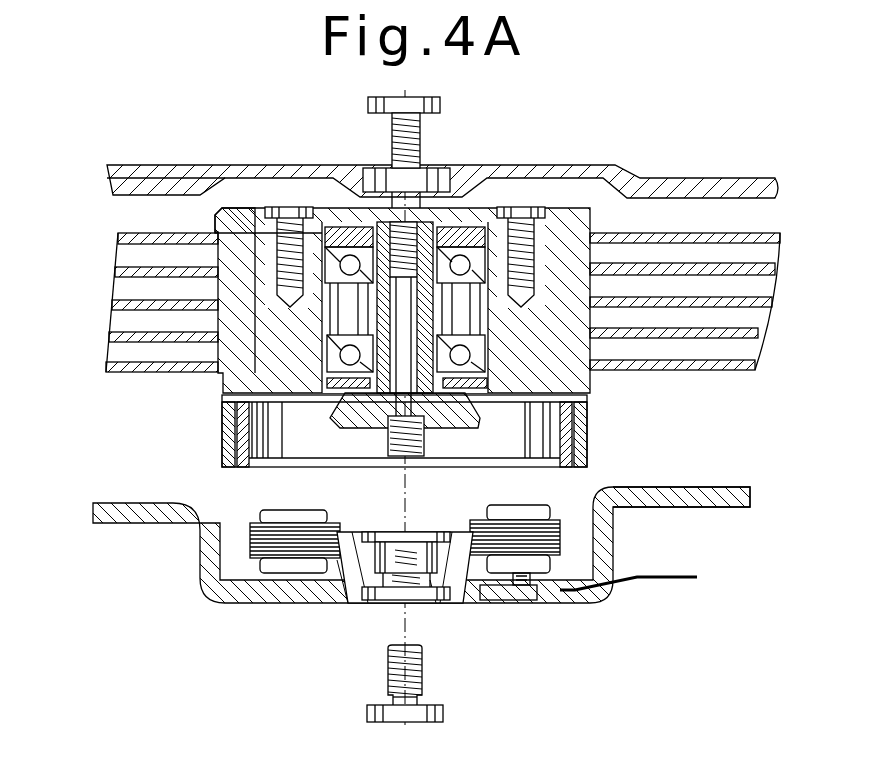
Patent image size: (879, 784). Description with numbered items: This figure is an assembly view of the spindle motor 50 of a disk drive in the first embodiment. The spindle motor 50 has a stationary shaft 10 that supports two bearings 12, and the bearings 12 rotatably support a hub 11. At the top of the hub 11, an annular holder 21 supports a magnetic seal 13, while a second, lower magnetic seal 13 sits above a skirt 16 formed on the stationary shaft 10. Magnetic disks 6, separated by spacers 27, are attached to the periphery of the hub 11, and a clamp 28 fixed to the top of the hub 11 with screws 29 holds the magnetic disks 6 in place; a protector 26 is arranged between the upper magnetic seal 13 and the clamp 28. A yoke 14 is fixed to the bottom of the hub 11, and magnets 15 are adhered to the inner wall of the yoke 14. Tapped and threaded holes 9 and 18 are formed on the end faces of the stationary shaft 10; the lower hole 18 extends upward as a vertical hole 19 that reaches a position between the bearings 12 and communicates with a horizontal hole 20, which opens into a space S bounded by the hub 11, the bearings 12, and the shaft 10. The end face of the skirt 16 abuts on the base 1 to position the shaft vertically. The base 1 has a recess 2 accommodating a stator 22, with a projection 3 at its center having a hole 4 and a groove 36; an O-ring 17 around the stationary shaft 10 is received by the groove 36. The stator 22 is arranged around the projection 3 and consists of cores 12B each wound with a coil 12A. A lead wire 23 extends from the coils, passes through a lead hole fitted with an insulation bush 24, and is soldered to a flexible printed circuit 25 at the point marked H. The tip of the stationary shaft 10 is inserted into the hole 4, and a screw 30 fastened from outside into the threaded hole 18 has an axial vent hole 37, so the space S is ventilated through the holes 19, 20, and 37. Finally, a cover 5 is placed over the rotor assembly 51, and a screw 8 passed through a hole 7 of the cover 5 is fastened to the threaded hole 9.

The base 1 is at (690, 492).
The recess 2 is at (575, 572).
The projection 3 is at (458, 560).
The hole 4 is at (413, 563).
The cover 5 is at (710, 178).
The magnetic disks 6 is at (725, 372).
The hole 7 is at (392, 192).
The screw 8 is at (440, 102).
The tapped and threaded hole 9 is at (290, 405).
The stationary shaft 10 is at (425, 262).
The hub 11 is at (623, 280).
The bearings 12 is at (517, 250).
The coil 12A is at (253, 535).
The cores 12B is at (257, 567).
The magnetic seal 13 is at (455, 225).
The yoke 14 is at (588, 416).
The magnets 15 is at (557, 440).
The skirt 16 is at (357, 430).
The O-ring 17 is at (398, 456).
The threaded hole 18 is at (412, 400).
The vertical hole 19 is at (440, 420).
The horizontal hole 20 is at (340, 392).
The annular holder 21 is at (335, 215).
The stator 22 is at (295, 545).
The lead wire 23 is at (543, 590).
The insulation bush 24 is at (487, 585).
The flexible printed circuit 25 is at (663, 580).
The protector 26 is at (362, 228).
The spacers 27 is at (222, 318).
The clamp 28 is at (212, 226).
The screws 29 is at (285, 222).
The screw 30 is at (445, 715).
The groove 36 is at (363, 547).
The axial vent hole 37 is at (425, 672).
The spindle motor 50 is at (88, 234).
The rotor assembly 51 is at (100, 267).
The space S is at (600, 352).
The soldering point H is at (546, 660).